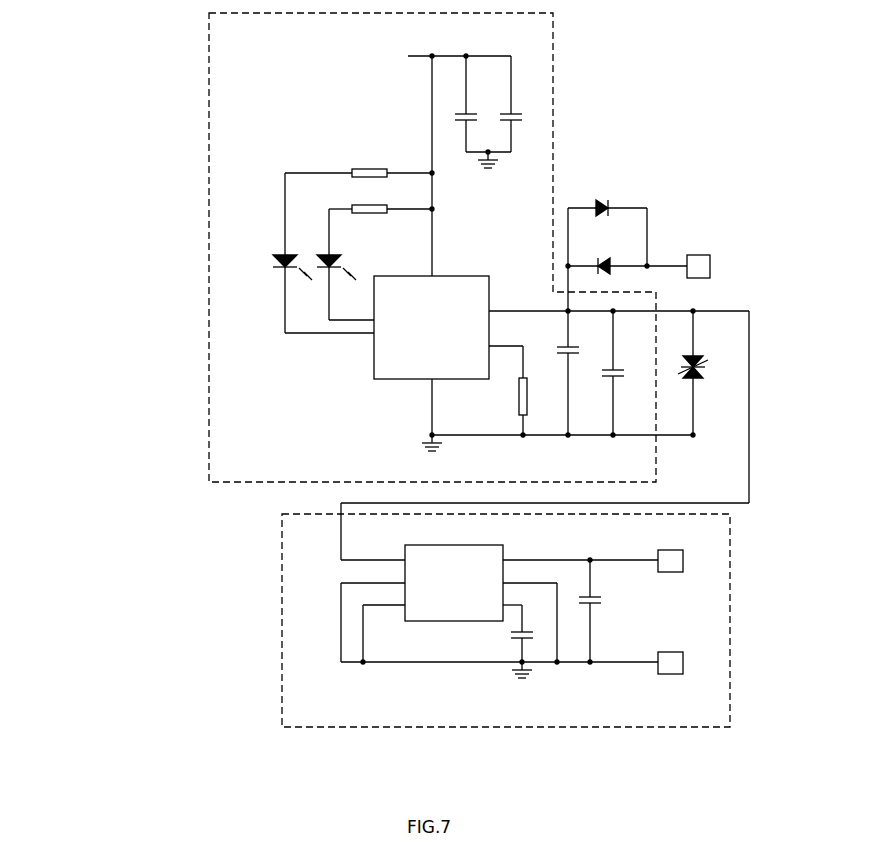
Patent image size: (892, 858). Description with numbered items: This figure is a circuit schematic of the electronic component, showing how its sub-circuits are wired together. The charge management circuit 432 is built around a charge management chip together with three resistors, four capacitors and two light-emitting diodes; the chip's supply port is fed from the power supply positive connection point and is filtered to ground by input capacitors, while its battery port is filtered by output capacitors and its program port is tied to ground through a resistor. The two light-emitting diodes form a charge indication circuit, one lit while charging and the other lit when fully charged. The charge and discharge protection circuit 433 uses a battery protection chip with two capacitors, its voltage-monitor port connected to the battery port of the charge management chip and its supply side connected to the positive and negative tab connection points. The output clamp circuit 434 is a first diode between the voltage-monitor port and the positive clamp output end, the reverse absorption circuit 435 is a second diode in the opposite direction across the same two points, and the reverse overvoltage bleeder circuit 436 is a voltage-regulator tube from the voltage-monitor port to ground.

The charge management circuit 432 is at (252, 63).
The charge and discharge protection circuit 433 is at (309, 626).
The output clamp circuit 434 is at (615, 208).
The reverse absorption circuit 435 is at (612, 264).
The reverse overvoltage bleeder circuit 436 is at (703, 373).